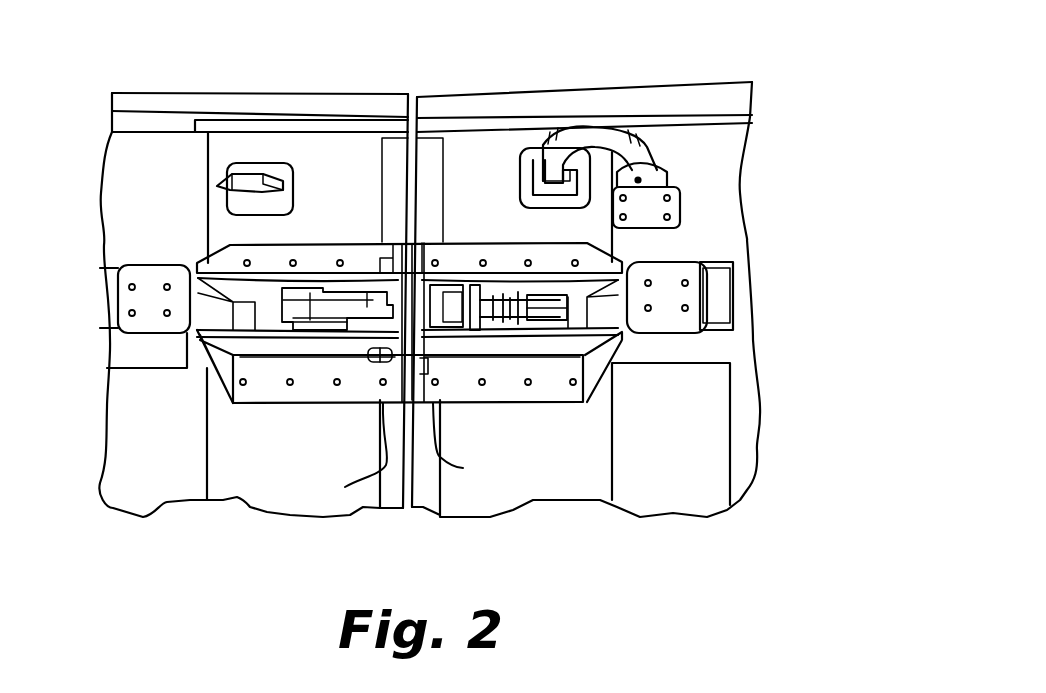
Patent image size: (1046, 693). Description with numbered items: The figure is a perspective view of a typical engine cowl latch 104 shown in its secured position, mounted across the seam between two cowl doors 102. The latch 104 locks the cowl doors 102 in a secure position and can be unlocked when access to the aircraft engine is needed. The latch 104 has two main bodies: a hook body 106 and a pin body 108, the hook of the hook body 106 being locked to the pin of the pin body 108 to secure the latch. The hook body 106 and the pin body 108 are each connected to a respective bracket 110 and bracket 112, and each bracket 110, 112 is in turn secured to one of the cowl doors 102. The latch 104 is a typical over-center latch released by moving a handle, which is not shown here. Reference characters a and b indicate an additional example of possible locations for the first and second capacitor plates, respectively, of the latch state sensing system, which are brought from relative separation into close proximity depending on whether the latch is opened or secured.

The cowl doors 102 is at (274, 511).
The latch 104 is at (309, 185).
The hook body 106 is at (350, 308).
The pin body 108 is at (471, 305).
The bracket 110 is at (257, 392).
The bracket 112 is at (633, 307).
The possible location for first capacitor plate a is at (356, 450).
The possible location for second capacitor plate b is at (461, 443).